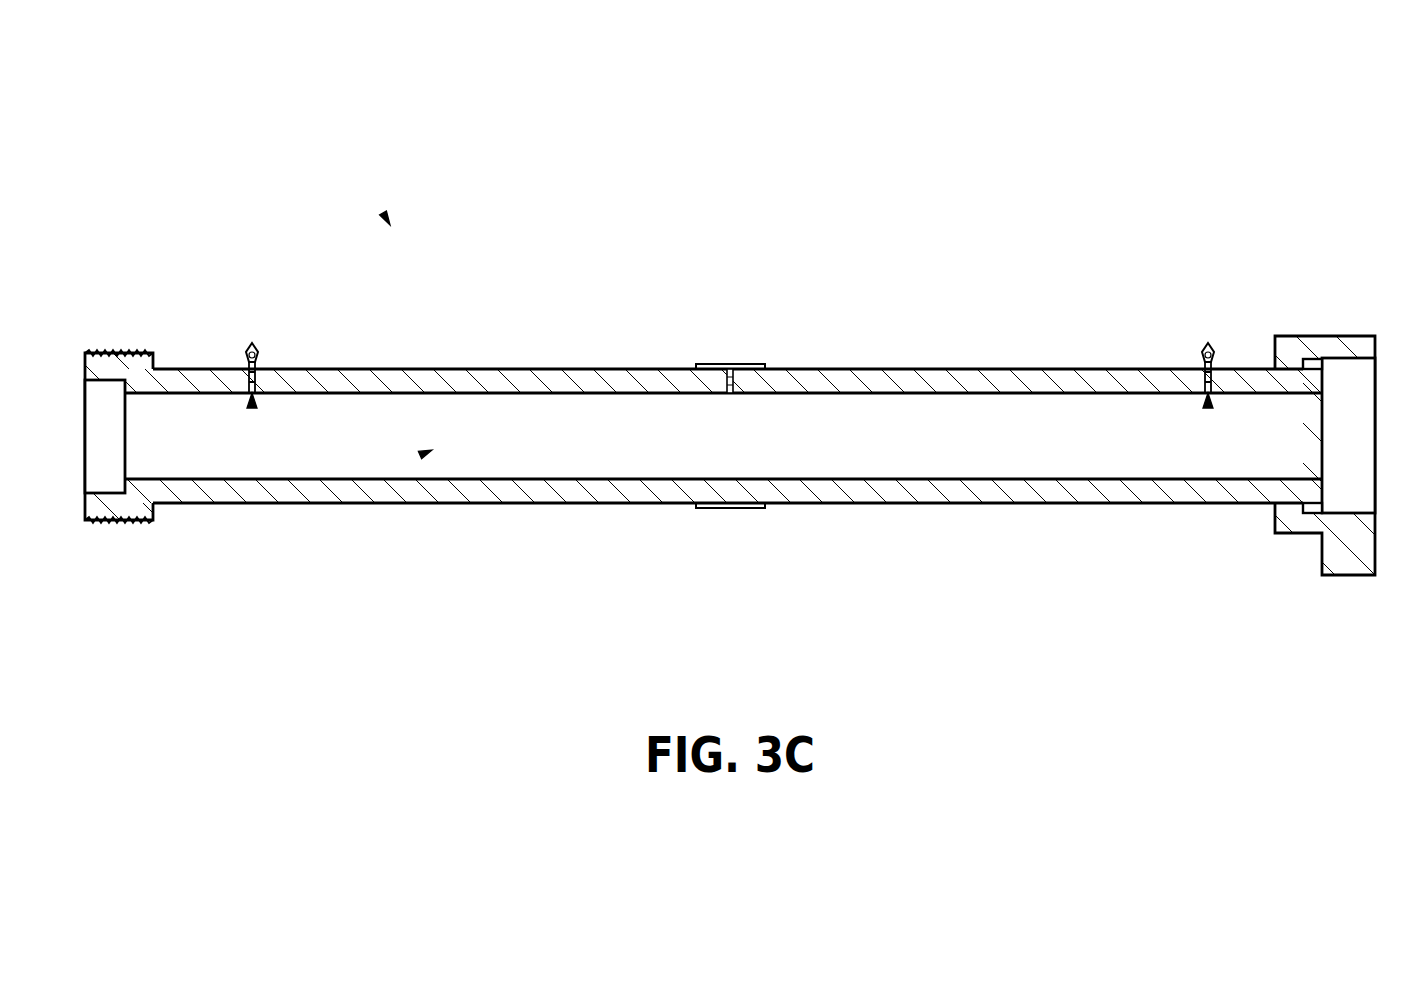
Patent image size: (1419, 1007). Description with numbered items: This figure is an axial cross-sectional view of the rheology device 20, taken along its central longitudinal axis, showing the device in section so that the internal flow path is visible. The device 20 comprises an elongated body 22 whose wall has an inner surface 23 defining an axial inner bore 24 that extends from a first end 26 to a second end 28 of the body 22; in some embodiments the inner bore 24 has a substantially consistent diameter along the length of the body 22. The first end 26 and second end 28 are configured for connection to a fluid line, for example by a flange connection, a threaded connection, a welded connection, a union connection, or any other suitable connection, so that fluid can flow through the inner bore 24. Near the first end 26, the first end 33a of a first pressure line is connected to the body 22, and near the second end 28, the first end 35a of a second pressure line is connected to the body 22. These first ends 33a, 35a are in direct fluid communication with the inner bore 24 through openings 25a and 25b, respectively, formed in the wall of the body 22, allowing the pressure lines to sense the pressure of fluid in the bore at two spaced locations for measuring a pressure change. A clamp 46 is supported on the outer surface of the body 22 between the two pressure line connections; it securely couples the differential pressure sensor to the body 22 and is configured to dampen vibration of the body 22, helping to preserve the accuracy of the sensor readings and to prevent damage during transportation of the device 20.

The rheology device 20 is at (386, 220).
The elongated body 22 is at (572, 505).
The inner surface 23 is at (962, 442).
The inner bore 24 is at (428, 451).
The opening 25a is at (252, 407).
The opening 25b is at (1208, 407).
The first end 26 is at (108, 508).
The second end 28 is at (1355, 568).
The first end of first pressure line 33a is at (250, 344).
The first end of second pressure line 35a is at (1208, 345).
The clamp 46 is at (730, 364).